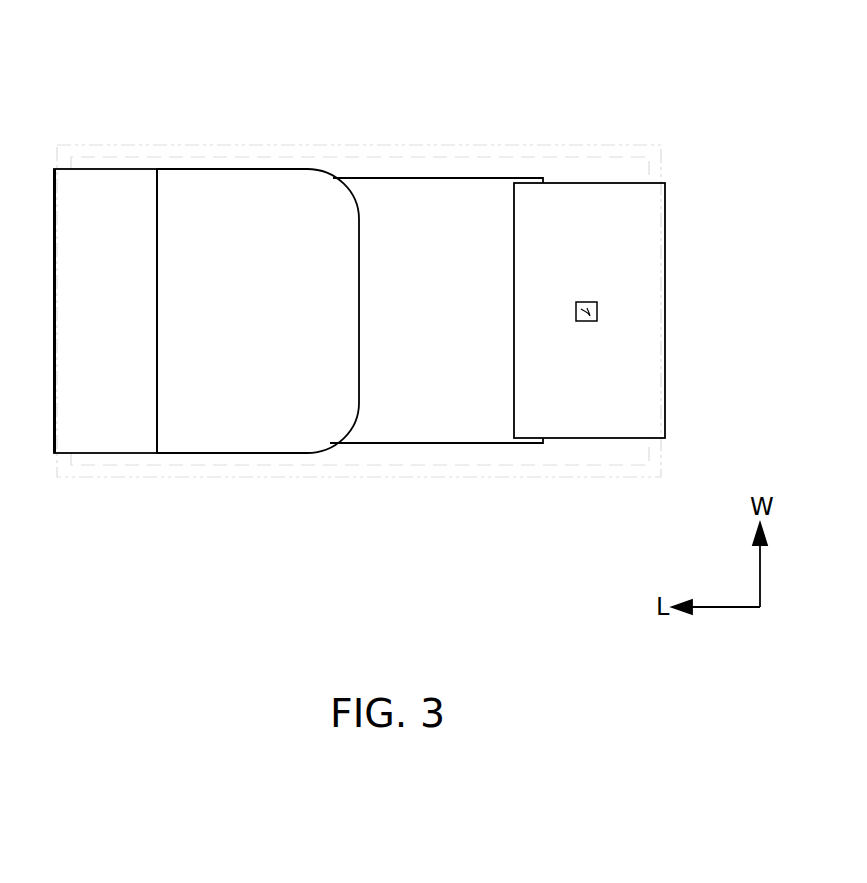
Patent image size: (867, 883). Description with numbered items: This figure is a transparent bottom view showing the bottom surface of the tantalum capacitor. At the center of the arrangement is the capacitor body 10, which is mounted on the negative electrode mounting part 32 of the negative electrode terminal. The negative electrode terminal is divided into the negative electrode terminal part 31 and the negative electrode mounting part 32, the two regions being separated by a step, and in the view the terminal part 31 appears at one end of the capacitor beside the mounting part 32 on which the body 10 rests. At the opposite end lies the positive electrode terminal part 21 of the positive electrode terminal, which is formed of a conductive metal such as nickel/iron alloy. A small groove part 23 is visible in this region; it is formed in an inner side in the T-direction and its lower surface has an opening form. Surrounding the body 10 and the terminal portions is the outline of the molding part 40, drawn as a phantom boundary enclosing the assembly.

The capacitor body 10 is at (423, 433).
The positive electrode terminal part 21 is at (583, 420).
The groove part 23 is at (597, 301).
The negative electrode terminal part 31 is at (127, 415).
The negative electrode mounting part 32 is at (262, 433).
The molding part 40 is at (592, 153).